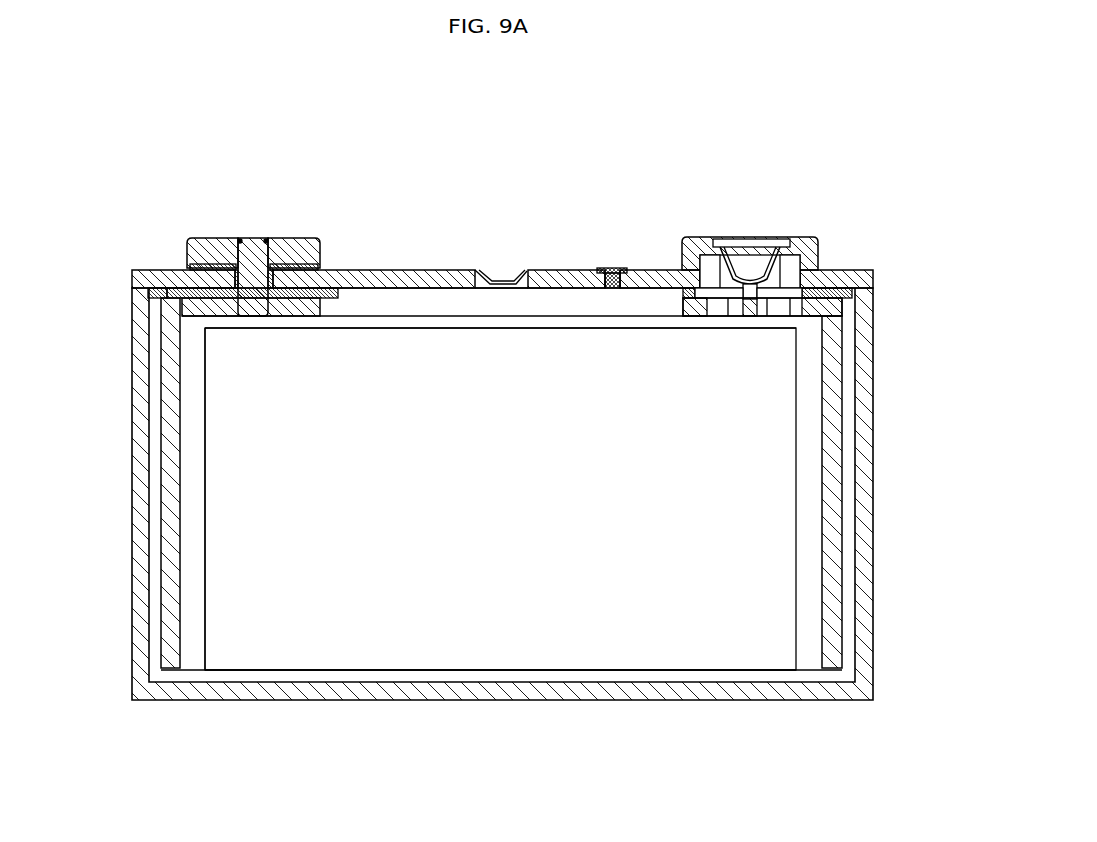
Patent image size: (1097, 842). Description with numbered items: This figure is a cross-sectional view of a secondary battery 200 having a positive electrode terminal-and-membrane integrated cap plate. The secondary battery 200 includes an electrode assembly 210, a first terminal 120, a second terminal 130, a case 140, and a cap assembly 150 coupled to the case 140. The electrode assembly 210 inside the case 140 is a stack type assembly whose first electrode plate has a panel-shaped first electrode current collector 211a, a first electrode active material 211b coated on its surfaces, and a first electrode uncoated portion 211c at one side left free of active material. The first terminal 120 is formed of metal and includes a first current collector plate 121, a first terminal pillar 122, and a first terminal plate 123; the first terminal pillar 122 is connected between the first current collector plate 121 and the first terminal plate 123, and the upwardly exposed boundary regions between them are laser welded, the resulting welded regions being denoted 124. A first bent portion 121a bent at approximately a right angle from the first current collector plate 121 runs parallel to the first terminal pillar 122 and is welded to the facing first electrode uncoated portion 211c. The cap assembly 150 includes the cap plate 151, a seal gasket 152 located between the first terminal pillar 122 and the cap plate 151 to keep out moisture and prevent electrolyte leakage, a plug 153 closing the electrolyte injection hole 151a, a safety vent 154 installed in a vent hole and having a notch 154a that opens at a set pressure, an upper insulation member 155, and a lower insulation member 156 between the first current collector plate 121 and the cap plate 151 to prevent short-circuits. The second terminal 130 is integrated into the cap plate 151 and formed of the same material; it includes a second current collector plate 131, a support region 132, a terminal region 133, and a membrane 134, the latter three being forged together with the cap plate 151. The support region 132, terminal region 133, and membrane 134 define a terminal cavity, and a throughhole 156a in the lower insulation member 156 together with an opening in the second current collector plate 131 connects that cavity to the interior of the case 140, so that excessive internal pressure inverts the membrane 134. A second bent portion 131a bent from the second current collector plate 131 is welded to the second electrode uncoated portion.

The secondary battery 200 is at (870, 103).
The first terminal 120 is at (253, 218).
The first terminal pillar 122 is at (240, 258).
The first terminal plate 123 is at (295, 252).
The welded regions 124 is at (266, 241).
The upper insulation member 155 is at (320, 267).
The seal gasket 152 is at (302, 290).
The cap plate 151 is at (426, 268).
The notch 154a is at (483, 268).
The safety vent 154 is at (522, 268).
The plug 153 is at (610, 268).
The electrolyte injection hole 151a is at (606, 288).
The first current collector plate 121 is at (322, 309).
The first bent portion 121a is at (170, 537).
The lower insulation member 156 is at (157, 291).
The second terminal 130 is at (729, 228).
The support region 132 is at (688, 257).
The terminal region 133 is at (700, 247).
The membrane 134 is at (732, 268).
The throughhole 156a is at (808, 277).
The cap assembly 150 is at (872, 258).
The second current collector plate 131 is at (683, 307).
The second bent portion 131a is at (832, 545).
The case 140 is at (874, 437).
The electrode assembly 210 is at (600, 683).
The first electrode current collector 211a is at (385, 670).
The first electrode active material 211b is at (461, 636).
The first electrode uncoated portion 211c is at (195, 655).